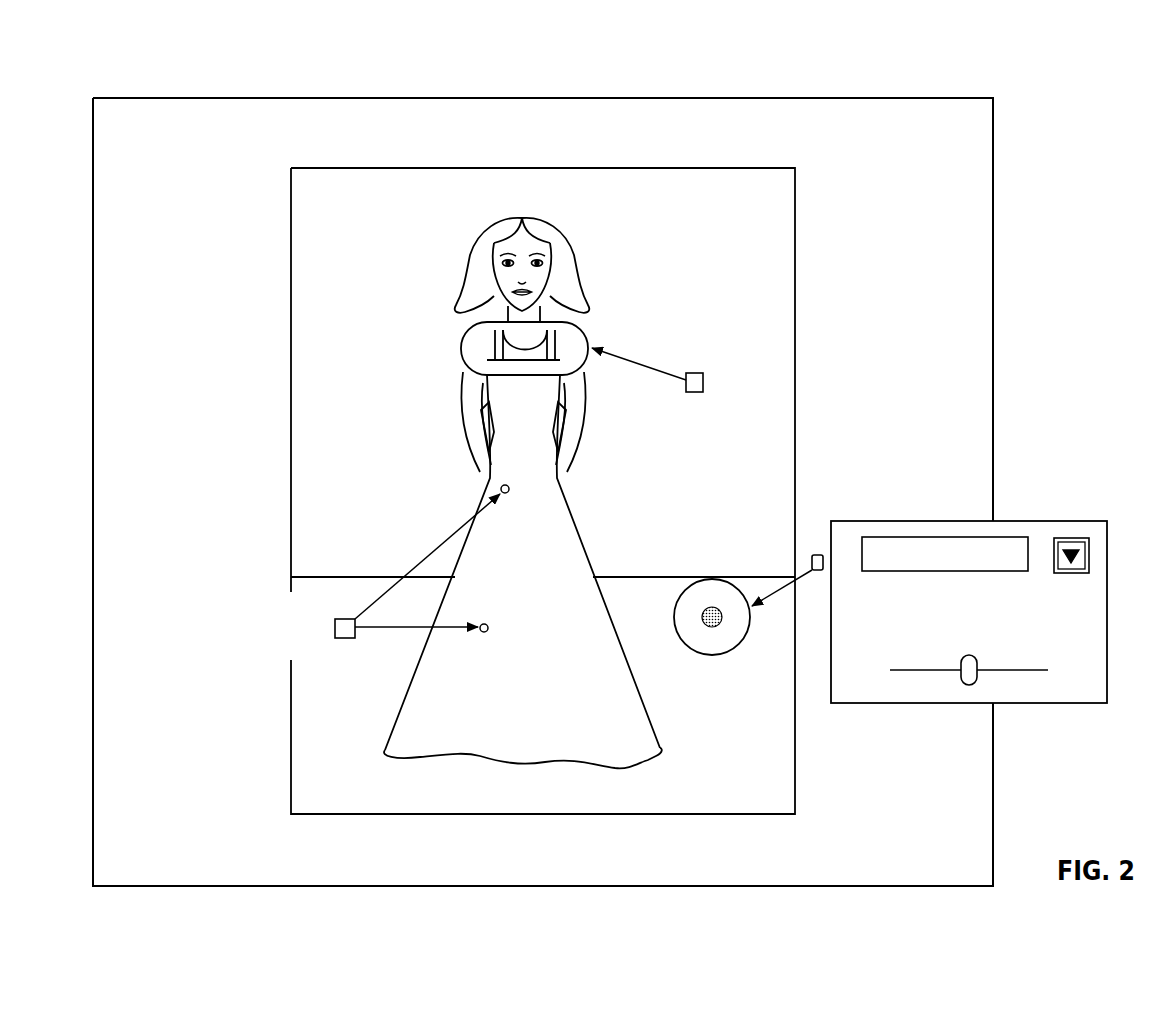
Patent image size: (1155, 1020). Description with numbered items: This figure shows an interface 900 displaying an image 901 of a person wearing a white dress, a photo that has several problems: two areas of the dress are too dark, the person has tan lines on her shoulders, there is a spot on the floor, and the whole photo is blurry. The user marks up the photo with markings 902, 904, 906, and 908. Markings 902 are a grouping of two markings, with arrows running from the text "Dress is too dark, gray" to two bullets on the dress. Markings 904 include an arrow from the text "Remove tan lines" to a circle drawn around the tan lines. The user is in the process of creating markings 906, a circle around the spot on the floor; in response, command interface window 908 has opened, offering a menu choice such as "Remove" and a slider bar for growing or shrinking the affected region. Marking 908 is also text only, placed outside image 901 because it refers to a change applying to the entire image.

The interface 900 is at (136, 50).
The image 901 is at (352, 168).
The markings 902 is at (500, 488).
The markings 904 is at (583, 329).
The markings 906 is at (712, 655).
The command interface (window) 908 is at (893, 521).